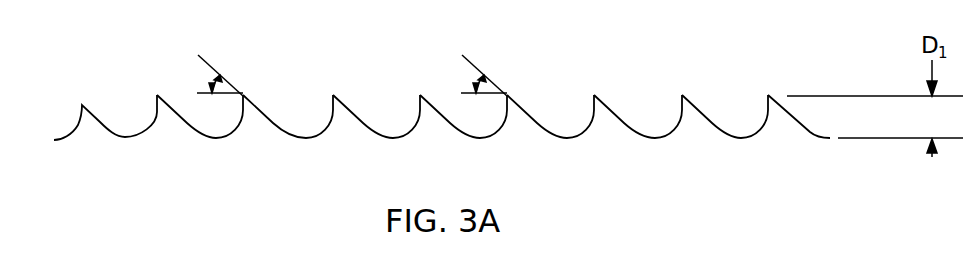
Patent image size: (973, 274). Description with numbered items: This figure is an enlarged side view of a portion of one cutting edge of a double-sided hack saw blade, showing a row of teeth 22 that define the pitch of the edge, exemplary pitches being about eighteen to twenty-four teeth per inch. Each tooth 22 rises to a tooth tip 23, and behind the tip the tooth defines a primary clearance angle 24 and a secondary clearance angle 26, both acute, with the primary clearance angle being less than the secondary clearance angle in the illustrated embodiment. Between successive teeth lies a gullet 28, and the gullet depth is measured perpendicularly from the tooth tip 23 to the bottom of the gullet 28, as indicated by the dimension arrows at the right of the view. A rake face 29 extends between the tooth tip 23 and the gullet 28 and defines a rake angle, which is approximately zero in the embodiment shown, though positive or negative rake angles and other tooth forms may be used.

The tooth 22 is at (96, 119).
The primary clearance angle 24 is at (216, 78).
The gullet 28 is at (313, 136).
The secondary clearance angle 26 is at (480, 78).
The tooth tip 23 is at (594, 95).
The rake face 29 is at (766, 108).